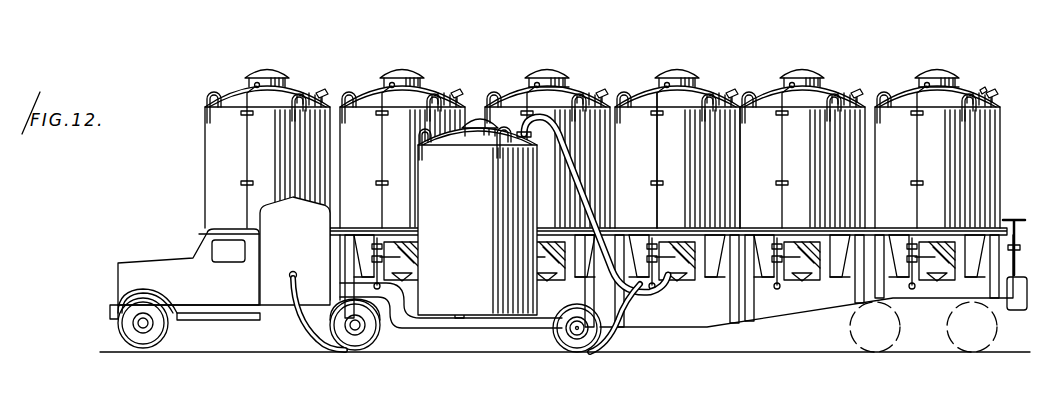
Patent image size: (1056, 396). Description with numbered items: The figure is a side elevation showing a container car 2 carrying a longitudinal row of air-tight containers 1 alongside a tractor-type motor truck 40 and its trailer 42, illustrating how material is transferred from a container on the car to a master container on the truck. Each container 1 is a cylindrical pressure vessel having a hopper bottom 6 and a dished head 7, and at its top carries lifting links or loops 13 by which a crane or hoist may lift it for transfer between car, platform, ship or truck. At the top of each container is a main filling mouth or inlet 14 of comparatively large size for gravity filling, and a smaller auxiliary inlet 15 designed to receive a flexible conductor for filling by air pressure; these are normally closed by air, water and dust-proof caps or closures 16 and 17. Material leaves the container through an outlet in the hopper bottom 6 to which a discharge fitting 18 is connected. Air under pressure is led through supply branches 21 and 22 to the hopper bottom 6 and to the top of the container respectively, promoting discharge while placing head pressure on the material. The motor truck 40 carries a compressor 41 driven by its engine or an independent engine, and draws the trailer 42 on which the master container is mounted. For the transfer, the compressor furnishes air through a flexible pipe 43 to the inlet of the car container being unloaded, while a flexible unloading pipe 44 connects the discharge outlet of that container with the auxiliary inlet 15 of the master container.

The air-tight container 1 is at (992, 158).
The container car 2 is at (1005, 258).
The hopper bottom 6 is at (690, 260).
The dished head 7 is at (502, 98).
The lifting links or loops 13 is at (490, 100).
The main control filling mouth or inlet 14 is at (549, 80).
The auxiliary filling mouth or inlet 15 is at (597, 89).
The cap or closure 16 is at (544, 76).
The cap or closure 17 is at (985, 93).
The discharge fitting 18 is at (806, 280).
The supply branch 21 is at (658, 257).
The supply branch 22 is at (658, 155).
The motor truck 40 is at (209, 318).
The compressor 41 is at (295, 251).
The trailer 42 is at (502, 321).
The flexible pipe 43 is at (424, 347).
The flexible unloading pipe 44 is at (583, 212).